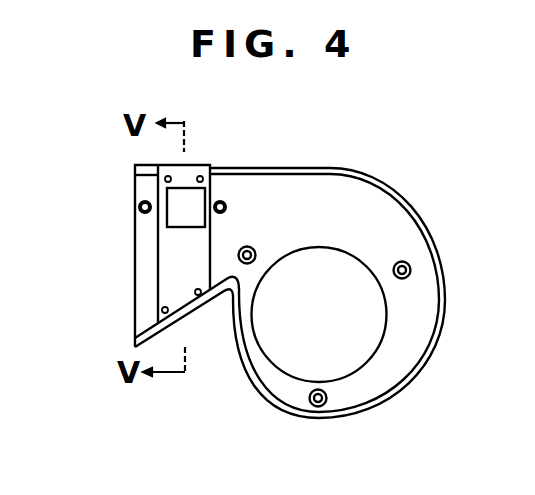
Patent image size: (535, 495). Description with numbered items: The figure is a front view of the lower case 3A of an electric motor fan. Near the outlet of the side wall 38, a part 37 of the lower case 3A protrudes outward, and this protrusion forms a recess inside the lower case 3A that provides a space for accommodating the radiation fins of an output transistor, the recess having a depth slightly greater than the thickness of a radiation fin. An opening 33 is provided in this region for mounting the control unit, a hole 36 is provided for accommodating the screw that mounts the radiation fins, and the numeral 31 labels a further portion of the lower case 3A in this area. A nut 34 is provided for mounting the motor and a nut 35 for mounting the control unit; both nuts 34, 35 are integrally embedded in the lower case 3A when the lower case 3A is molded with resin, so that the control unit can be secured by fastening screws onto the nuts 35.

The lower case 3A is at (395, 197).
The mounting bracket 31 is at (135, 188).
The opening 33 is at (195, 201).
The nut 34 is at (320, 408).
The nut 35 is at (227, 212).
The hole 36 is at (162, 311).
The part of the lower case 37 is at (172, 265).
The side wall 38 is at (227, 272).